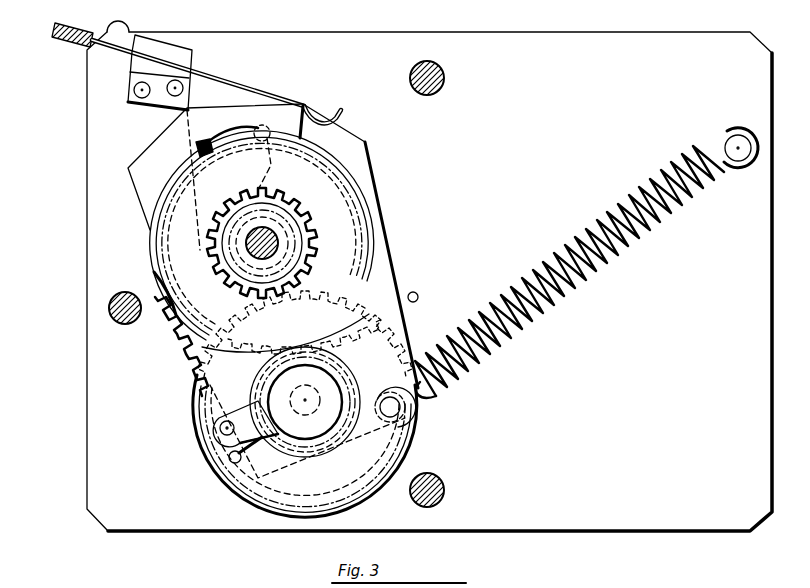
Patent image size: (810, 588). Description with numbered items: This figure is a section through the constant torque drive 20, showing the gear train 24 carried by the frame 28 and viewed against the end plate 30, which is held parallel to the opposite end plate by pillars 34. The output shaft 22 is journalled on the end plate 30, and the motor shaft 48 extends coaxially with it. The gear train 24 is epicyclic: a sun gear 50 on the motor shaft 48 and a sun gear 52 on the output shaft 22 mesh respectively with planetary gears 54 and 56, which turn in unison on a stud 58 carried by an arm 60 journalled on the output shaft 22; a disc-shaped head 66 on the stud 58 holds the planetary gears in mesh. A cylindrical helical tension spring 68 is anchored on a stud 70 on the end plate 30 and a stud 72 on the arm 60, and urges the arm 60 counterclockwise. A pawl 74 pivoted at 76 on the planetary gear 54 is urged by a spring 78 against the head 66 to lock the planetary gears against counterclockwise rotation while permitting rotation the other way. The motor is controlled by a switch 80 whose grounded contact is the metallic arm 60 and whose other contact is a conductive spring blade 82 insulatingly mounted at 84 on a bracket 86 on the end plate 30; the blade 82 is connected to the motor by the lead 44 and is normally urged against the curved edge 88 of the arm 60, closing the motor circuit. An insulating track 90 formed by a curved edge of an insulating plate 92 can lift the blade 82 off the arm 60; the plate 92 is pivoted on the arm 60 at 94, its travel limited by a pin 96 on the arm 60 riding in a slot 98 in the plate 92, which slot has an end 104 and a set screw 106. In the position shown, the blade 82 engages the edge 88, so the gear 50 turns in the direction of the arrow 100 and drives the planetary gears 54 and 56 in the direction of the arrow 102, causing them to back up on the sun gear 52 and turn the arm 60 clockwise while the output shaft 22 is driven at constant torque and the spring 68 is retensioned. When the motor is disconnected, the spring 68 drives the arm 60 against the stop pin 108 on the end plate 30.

The constant torque drive 20 is at (118, 228).
The output shaft 22 is at (289, 228).
The gear train 24 is at (200, 346).
The frame 28 is at (86, 404).
The end plate 30 is at (612, 413).
The pillars 34 is at (440, 91).
The lead 44 is at (95, 47).
The motor shaft 48 is at (262, 228).
The sun gear 50 is at (315, 262).
The sun gear 52 is at (385, 276).
The planetary gear 54 is at (393, 343).
The planetary gear 56 is at (342, 356).
The stud 58 is at (307, 411).
The arm 60 is at (392, 245).
The head 66 is at (326, 390).
The spring 68 is at (566, 245).
The stud 70 is at (741, 140).
The stud 72 is at (405, 425).
The pawl 74 is at (245, 418).
The pivot 76 is at (220, 430).
The spring 78 is at (249, 450).
The switch 80 is at (337, 101).
The contact blade 82 is at (257, 88).
The insulating mounting 84 is at (183, 66).
The bracket 86 is at (158, 99).
The curved edge 88 is at (350, 133).
The insulating track 90 is at (304, 104).
The insulating plate 92 is at (198, 150).
The pivot 94 is at (305, 404).
The pin 96 is at (220, 142).
The slot 98 is at (272, 128).
The arrow 100 is at (283, 254).
The arrow 102 is at (283, 327).
The slot end 104 is at (273, 164).
The set screw 106 is at (203, 160).
The stop pin 108 is at (419, 297).